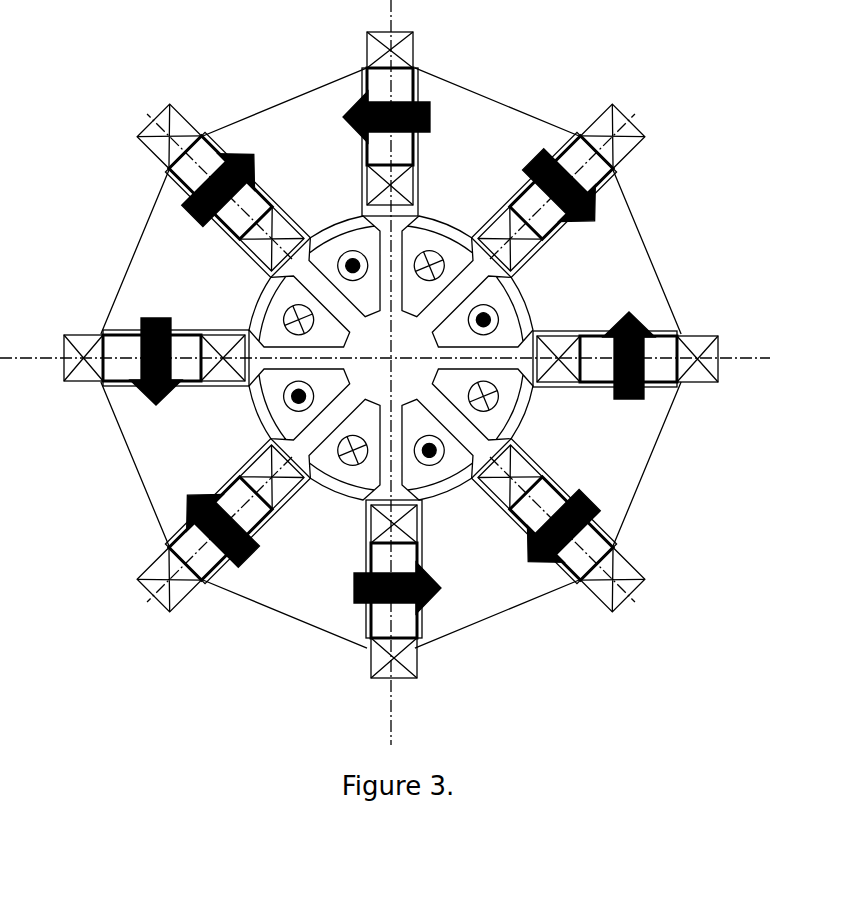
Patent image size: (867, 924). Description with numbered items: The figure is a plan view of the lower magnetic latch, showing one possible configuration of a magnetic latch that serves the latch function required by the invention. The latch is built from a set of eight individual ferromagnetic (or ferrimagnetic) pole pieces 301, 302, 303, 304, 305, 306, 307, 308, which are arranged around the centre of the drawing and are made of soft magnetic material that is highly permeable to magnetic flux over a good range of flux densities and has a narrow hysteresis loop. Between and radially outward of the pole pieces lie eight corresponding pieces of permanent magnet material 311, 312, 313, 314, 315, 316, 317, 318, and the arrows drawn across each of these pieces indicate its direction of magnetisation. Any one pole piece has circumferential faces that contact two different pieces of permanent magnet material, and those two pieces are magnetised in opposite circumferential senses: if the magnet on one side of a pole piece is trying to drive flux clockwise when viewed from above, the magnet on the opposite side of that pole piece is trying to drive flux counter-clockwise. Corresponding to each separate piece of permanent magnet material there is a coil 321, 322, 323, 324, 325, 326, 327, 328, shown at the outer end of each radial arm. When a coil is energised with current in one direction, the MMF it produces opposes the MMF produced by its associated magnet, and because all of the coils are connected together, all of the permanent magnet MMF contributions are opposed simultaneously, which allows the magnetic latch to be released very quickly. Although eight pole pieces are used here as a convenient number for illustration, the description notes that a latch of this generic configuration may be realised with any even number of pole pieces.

The pole piece 301 is at (525, 317).
The pole piece 302 is at (441, 235).
The pole piece 303 is at (345, 237).
The pole piece 304 is at (264, 319).
The pole piece 305 is at (265, 395).
The pole piece 306 is at (348, 475).
The pole piece 307 is at (441, 475).
The pole piece 308 is at (529, 398).
The piece of permanent magnet material 311 is at (667, 352).
The piece of permanent magnet material 312 is at (576, 157).
The piece of permanent magnet material 313 is at (378, 78).
The piece of permanent magnet material 314 is at (188, 172).
The piece of permanent magnet material 315 is at (120, 367).
The piece of permanent magnet material 316 is at (205, 562).
The piece of permanent magnet material 317 is at (405, 618).
The piece of permanent magnet material 318 is at (583, 540).
The coil 321 is at (700, 377).
The coil 322 is at (624, 147).
The coil 323 is at (405, 50).
The coil 324 is at (180, 127).
The coil 325 is at (82, 340).
The coil 326 is at (162, 566).
The coil 327 is at (377, 658).
The coil 328 is at (600, 588).